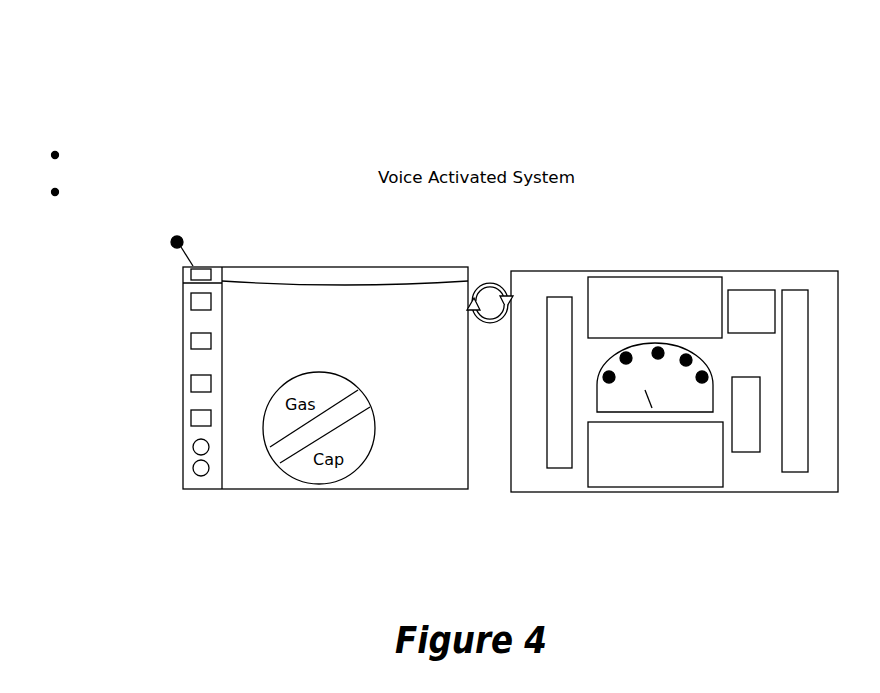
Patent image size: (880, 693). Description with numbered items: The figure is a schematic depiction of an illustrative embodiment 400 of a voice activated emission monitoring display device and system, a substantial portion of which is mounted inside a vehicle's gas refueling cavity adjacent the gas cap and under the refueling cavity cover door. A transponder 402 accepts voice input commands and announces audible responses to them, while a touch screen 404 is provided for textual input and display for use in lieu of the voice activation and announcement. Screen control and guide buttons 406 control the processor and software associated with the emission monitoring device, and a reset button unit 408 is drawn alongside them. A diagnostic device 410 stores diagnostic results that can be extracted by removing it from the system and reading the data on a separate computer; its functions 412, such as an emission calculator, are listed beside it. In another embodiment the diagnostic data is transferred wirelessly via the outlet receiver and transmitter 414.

The voice activated emission monitoring display device and system 400 is at (520, 100).
The transponder 402 is at (510, 258).
The touch screen system 404 is at (652, 500).
The screen control and guide buttons 406 is at (201, 481).
The reset button unit and system 408 is at (190, 445).
The Wizkid diagnostic 410 is at (170, 246).
The emission calculator and car and driver functions 412 is at (183, 232).
The outlet receiver and transmitter 414 is at (190, 252).